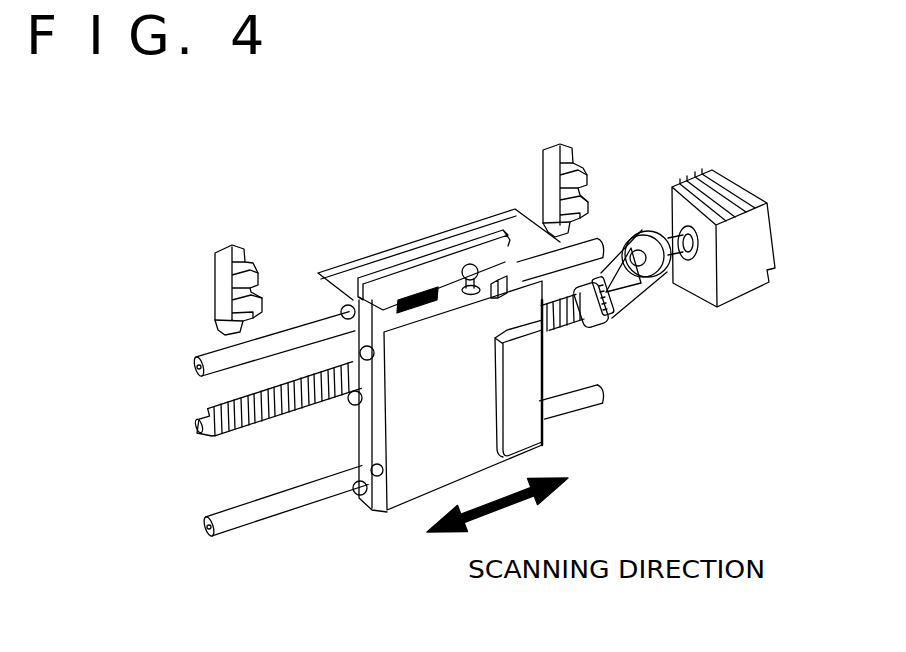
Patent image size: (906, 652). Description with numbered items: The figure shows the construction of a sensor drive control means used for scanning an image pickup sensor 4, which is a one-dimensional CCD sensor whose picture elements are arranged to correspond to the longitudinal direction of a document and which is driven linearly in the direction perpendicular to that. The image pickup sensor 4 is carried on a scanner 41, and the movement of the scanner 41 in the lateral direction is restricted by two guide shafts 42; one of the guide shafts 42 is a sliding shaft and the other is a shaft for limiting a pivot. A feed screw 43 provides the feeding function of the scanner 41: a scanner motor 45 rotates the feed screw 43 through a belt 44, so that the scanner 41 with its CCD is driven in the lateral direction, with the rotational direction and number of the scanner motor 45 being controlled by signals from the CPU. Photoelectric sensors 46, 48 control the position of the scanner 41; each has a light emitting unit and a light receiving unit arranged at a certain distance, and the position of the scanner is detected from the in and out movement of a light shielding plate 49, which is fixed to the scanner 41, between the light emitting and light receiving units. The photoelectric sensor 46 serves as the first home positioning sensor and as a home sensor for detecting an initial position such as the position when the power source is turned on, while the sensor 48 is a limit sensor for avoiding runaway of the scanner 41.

The image pickup sensor 4 is at (520, 397).
The scanner 41 is at (448, 328).
The guide shafts 42 is at (197, 345).
The feed screw 43 is at (202, 435).
The belt 44 is at (647, 290).
The scanner motor 45 is at (747, 257).
The photoelectric sensor 46 is at (222, 278).
The photoelectric sensor 48 is at (565, 148).
The light shielding plate 49 is at (344, 268).